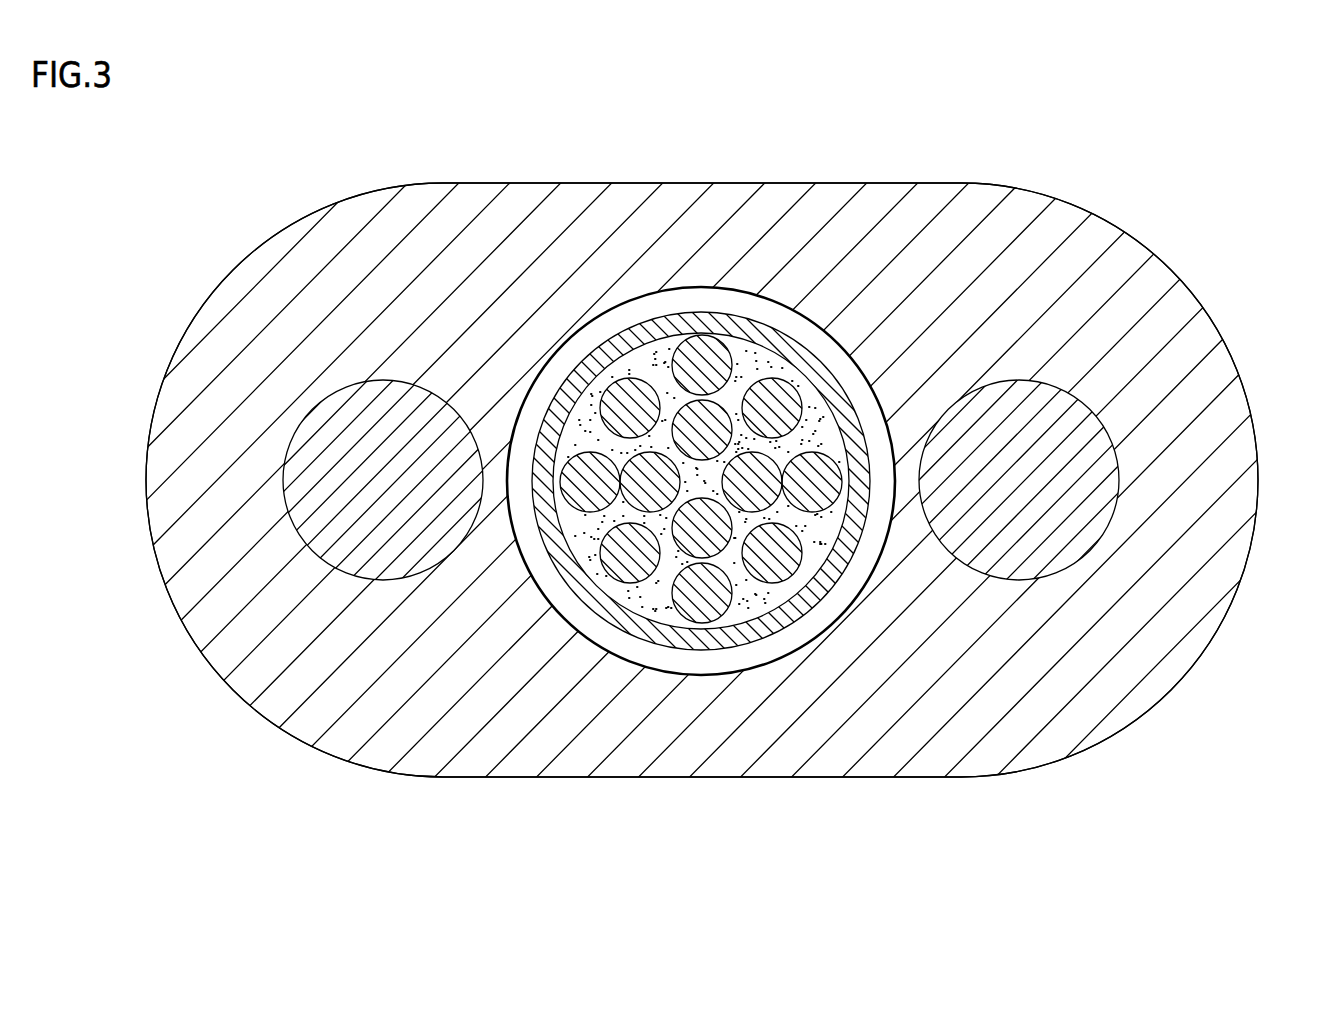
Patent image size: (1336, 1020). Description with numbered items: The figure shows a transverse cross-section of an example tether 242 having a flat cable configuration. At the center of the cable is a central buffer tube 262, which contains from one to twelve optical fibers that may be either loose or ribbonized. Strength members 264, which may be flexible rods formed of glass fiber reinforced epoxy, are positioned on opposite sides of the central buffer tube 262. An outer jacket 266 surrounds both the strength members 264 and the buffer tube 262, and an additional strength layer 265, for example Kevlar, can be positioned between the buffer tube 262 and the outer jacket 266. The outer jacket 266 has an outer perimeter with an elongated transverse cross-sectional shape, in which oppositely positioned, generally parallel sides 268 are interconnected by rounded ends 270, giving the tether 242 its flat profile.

The tether 242 is at (1193, 195).
The central buffer tube 262 is at (717, 635).
The strength members 264 is at (1087, 432).
The additional strength layer 265 is at (715, 302).
The outer jacket 266 is at (1035, 703).
The generally parallel sides 268 is at (585, 182).
The rounded ends 270 is at (148, 523).